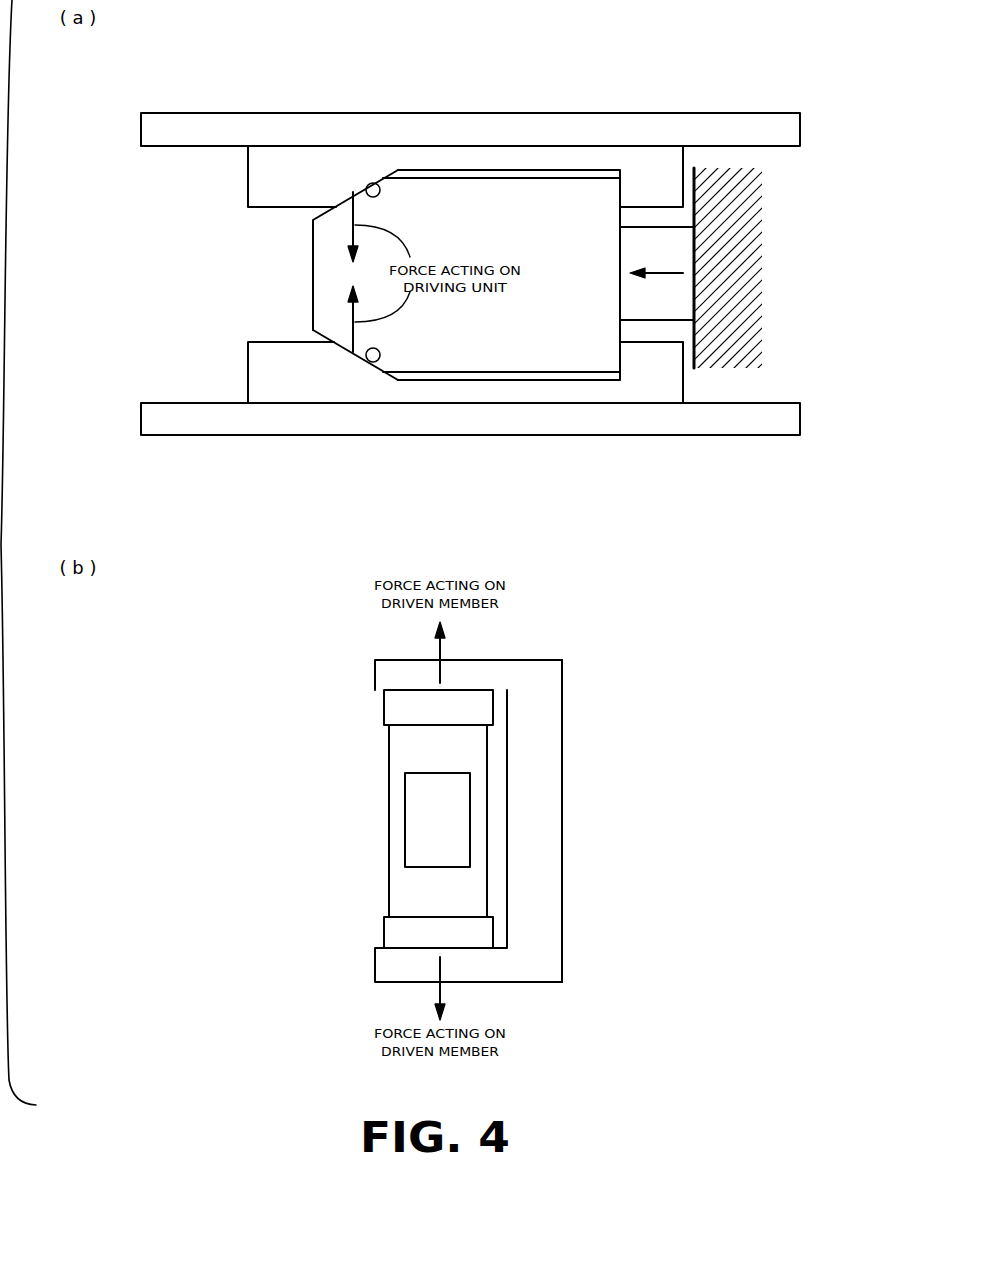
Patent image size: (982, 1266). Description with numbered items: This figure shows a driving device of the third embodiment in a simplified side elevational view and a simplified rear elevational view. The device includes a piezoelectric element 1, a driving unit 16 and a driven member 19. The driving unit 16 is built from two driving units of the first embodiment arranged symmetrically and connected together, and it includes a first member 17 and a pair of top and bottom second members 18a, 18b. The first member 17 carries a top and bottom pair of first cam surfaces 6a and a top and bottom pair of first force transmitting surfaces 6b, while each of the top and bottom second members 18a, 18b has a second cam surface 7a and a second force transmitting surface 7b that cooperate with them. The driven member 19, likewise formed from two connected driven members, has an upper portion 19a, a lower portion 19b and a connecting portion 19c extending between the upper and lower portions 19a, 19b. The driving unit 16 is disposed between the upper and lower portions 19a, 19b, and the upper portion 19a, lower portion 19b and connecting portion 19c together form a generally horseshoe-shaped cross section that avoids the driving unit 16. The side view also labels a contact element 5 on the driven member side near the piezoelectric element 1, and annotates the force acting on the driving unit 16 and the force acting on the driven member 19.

The piezoelectric element 1 is at (632, 252).
The contact member 5 is at (694, 183).
The first cam surface 6a is at (345, 197).
The first force transmitting surface 6b is at (622, 183).
The second cam surface 7a is at (353, 190).
The second force transmitting surface 7b is at (620, 194).
The driving unit 16 is at (311, 266).
The first member 17 is at (320, 310).
The top second member 18a is at (260, 173).
The bottom second member 18b is at (263, 380).
The driven member 19 is at (549, 505).
The upper portion 19a is at (538, 130).
The lower portion 19b is at (558, 423).
The connecting portion 19c is at (543, 818).